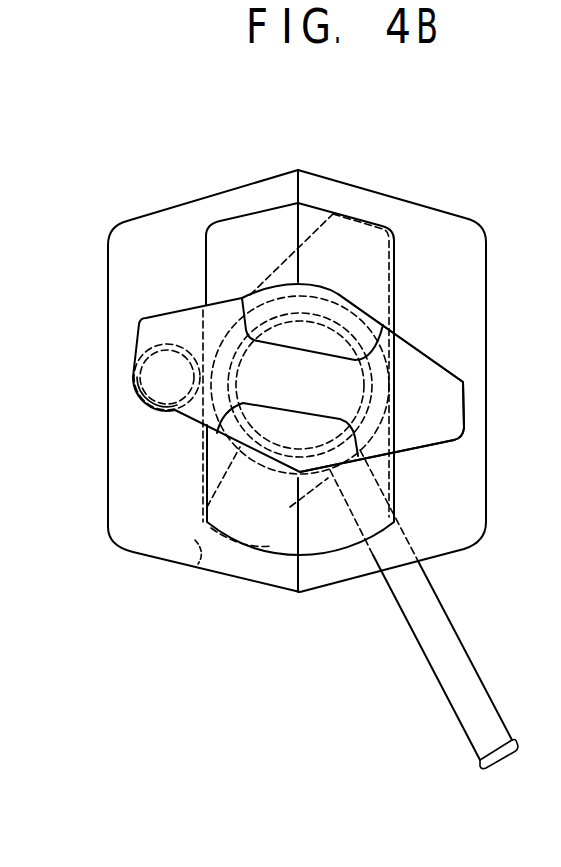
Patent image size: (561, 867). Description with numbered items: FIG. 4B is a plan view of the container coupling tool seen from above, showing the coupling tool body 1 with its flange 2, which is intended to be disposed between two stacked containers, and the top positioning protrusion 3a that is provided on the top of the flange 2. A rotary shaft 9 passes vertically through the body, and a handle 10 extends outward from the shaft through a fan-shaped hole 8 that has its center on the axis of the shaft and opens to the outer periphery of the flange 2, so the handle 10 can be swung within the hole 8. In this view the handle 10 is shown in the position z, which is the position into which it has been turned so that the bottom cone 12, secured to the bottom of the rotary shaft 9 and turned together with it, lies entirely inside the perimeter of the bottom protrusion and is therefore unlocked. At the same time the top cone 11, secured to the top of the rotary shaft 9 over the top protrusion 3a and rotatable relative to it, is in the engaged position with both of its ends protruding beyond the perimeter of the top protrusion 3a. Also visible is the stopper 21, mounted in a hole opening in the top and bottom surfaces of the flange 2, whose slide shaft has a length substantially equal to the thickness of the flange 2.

The coupling tool body 1 is at (113, 228).
The flange 2 is at (128, 454).
The top positioning protrusion 3a is at (248, 221).
The hole 8 is at (204, 522).
The rotary shaft 9 is at (345, 384).
The handle 10 is at (448, 684).
The top cone 11 is at (162, 327).
The bottom cone 12 is at (362, 232).
The stopper 21 is at (158, 368).
The position z is at (504, 764).